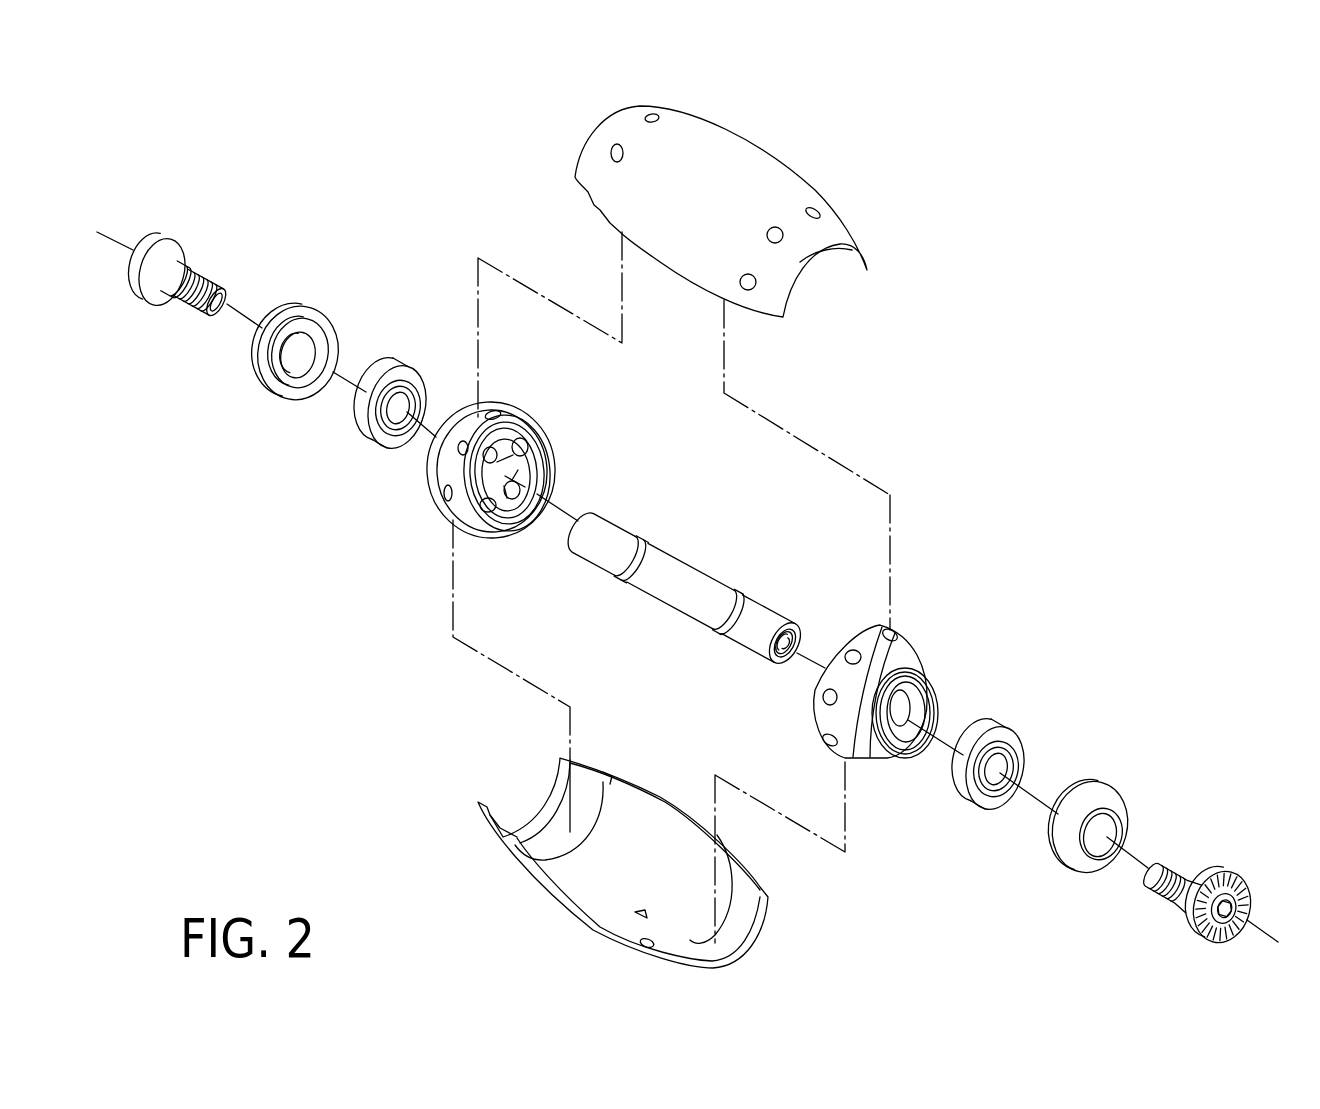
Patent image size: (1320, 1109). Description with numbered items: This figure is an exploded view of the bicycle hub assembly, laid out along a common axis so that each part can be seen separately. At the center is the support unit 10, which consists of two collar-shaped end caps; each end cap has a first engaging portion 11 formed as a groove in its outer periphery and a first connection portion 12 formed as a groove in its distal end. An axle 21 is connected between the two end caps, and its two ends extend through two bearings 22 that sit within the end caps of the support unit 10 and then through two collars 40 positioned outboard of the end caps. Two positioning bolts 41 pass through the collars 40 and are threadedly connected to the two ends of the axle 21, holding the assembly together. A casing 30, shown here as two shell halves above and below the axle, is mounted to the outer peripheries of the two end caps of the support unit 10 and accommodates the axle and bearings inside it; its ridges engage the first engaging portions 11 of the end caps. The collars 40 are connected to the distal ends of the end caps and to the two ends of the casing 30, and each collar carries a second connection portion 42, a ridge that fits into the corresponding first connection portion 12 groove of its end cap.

The support unit 10 is at (675, 556).
The first engaging portion 11 is at (430, 475).
The first connection portion 12 is at (940, 695).
The axle 21 is at (688, 588).
The bearing 22 is at (392, 368).
The casing 30 is at (800, 176).
The collar 40 is at (260, 367).
The positioning bolt 41 is at (167, 258).
The second connection portion 42 is at (318, 308).